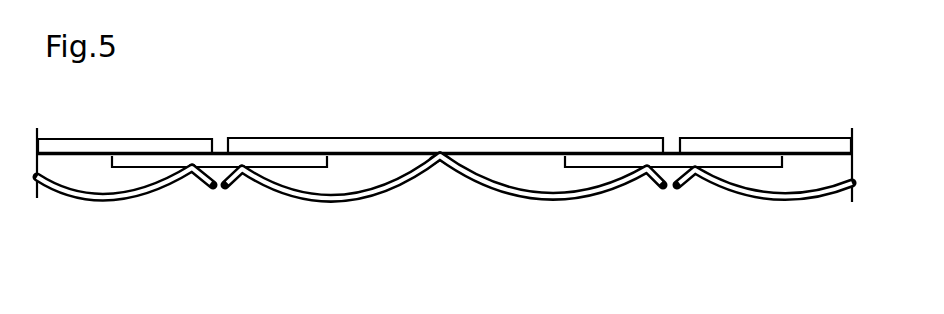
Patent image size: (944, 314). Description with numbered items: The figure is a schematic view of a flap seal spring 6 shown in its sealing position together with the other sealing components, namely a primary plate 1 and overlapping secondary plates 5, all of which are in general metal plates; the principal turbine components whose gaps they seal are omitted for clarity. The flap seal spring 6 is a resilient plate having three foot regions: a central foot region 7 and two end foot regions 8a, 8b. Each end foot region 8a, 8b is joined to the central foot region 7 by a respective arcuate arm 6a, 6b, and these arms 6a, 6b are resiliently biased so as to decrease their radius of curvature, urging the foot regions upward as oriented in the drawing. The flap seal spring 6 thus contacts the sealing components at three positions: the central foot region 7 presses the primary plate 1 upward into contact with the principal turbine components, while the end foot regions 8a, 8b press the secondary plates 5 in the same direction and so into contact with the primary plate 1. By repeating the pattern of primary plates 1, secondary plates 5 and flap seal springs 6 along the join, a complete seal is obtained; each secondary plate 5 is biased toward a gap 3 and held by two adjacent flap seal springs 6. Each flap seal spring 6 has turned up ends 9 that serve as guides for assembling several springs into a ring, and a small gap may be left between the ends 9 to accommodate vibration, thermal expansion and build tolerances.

The primary plate 1 is at (63, 140).
The gap 3 is at (671, 148).
The secondary plate 5 is at (725, 158).
The flap seal spring 6 is at (444, 201).
The arcuate arm 6a is at (328, 202).
The arcuate arm 6b is at (554, 197).
The central foot region 7 is at (440, 162).
The end foot region 8a is at (234, 187).
The end foot region 8b is at (626, 188).
The turned up end 9 is at (660, 188).